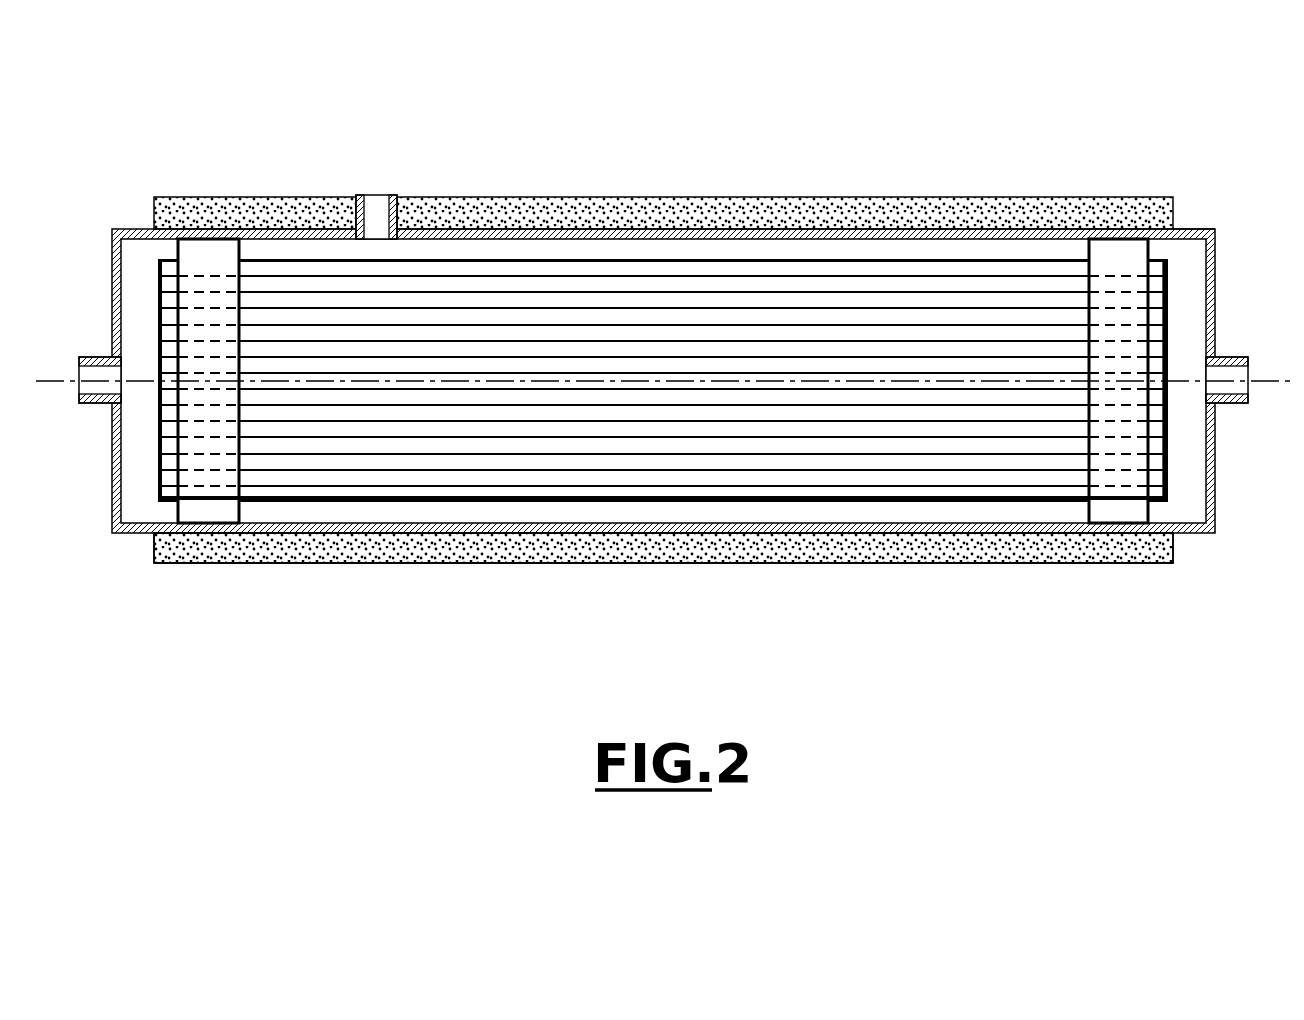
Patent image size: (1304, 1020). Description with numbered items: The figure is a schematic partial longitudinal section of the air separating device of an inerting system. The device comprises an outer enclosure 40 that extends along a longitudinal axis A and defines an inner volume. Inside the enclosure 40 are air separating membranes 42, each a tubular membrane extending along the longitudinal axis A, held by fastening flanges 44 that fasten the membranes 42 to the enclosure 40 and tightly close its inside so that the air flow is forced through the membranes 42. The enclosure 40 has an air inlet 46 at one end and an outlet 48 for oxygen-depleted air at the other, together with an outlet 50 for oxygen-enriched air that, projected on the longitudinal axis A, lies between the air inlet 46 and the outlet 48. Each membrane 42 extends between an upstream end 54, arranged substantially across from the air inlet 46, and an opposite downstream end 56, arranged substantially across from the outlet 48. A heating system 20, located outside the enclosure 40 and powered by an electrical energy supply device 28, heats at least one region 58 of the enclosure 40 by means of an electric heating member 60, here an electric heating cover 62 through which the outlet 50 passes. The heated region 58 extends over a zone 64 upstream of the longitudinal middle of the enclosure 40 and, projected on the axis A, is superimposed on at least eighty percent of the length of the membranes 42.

The heating system 20 is at (538, 580).
The electrical energy supply device 28 is at (1237, 225).
The outer enclosure 40 is at (112, 510).
The air separating membranes 42 is at (900, 350).
The fastening flanges 44 is at (203, 228).
The air inlet 46 is at (77, 352).
The outlet for oxygen-depleted air 48 is at (1256, 362).
The outlet for oxygen-enriched air 50 is at (376, 191).
The upstream end 54 is at (158, 430).
The downstream end 56 is at (1168, 480).
The region 58 is at (554, 226).
The electric heating member 60 is at (719, 197).
The electric heating cover 62 is at (663, 548).
The zone 64 is at (348, 495).
The longitudinal axis A is at (44, 380).